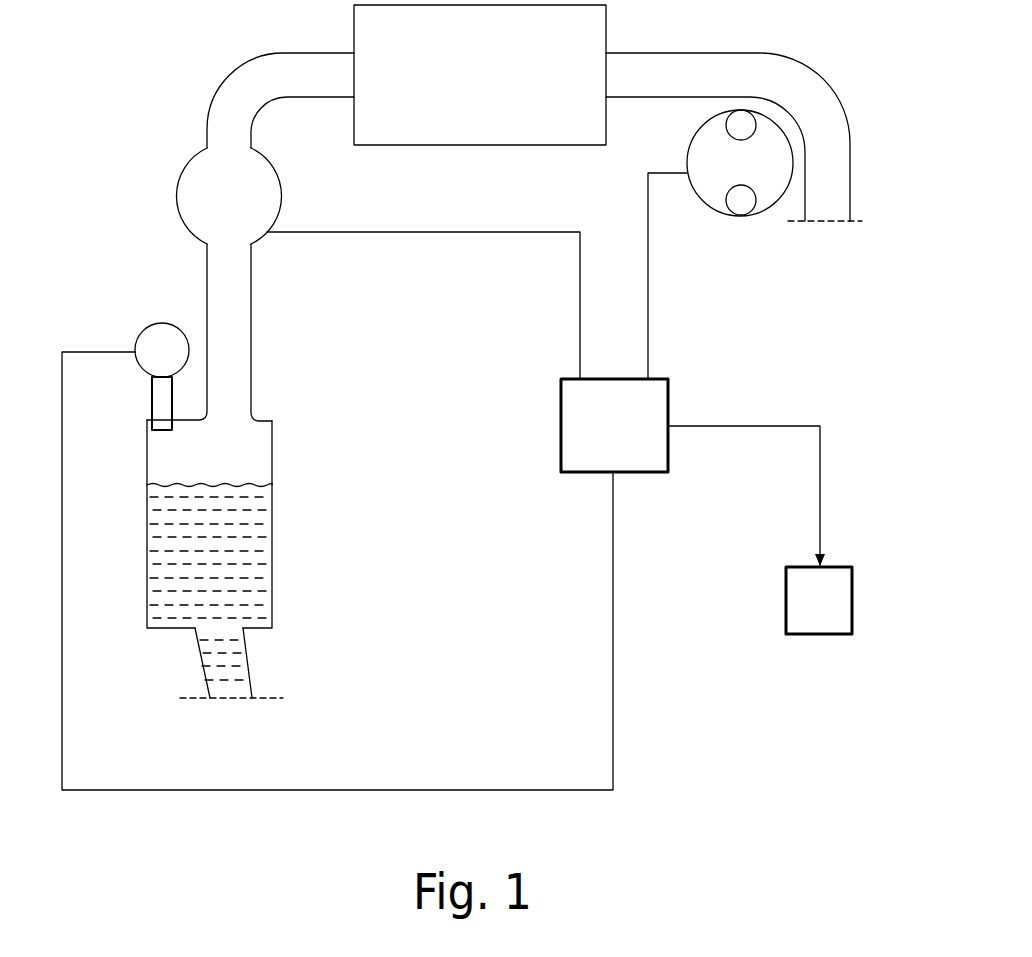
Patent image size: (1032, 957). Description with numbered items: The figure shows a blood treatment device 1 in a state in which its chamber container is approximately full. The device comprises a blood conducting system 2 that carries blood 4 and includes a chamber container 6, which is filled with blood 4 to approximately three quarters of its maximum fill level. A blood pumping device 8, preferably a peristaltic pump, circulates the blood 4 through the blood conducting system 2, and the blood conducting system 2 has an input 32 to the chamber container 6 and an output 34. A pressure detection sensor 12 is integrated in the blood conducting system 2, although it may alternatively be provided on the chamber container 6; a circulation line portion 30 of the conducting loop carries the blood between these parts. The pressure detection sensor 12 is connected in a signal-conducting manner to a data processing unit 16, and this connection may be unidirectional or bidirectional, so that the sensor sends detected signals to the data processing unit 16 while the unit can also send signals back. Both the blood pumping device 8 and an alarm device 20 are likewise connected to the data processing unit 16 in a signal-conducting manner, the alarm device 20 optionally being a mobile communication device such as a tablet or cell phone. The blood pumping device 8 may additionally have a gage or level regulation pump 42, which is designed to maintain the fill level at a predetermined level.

The blood treatment device 1 is at (530, 640).
The blood conducting system 2 is at (268, 308).
The blood 4 is at (165, 557).
The chamber container 6 is at (300, 549).
The blood pumping device 8 is at (742, 238).
The pressure detection sensor 12 is at (301, 206).
The data processing unit 16 is at (672, 485).
The alarm device 20 is at (845, 655).
The circulation pipe 30 is at (610, 158).
The input 32 is at (263, 661).
The output 34 is at (833, 243).
The level regulation pump 42 is at (130, 322).